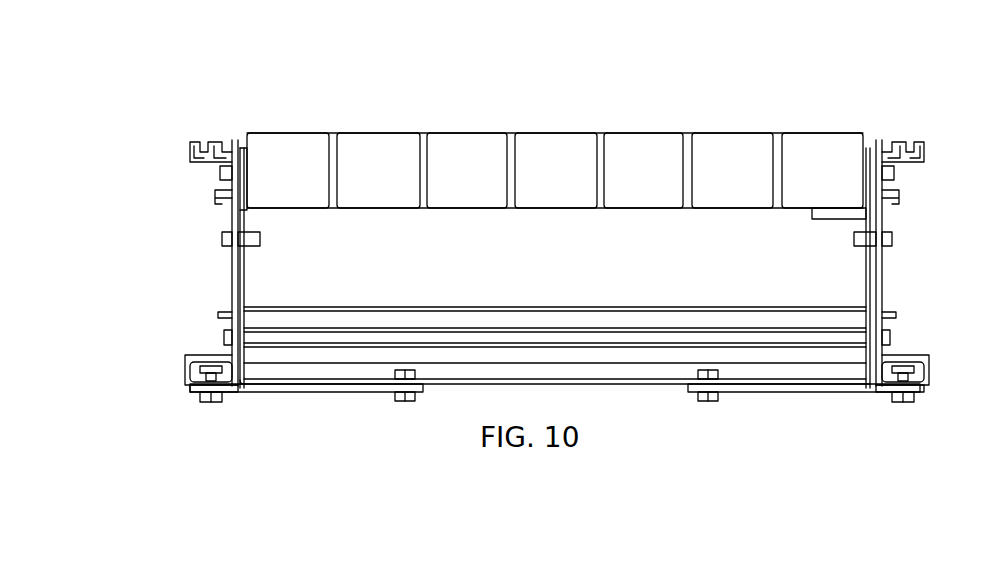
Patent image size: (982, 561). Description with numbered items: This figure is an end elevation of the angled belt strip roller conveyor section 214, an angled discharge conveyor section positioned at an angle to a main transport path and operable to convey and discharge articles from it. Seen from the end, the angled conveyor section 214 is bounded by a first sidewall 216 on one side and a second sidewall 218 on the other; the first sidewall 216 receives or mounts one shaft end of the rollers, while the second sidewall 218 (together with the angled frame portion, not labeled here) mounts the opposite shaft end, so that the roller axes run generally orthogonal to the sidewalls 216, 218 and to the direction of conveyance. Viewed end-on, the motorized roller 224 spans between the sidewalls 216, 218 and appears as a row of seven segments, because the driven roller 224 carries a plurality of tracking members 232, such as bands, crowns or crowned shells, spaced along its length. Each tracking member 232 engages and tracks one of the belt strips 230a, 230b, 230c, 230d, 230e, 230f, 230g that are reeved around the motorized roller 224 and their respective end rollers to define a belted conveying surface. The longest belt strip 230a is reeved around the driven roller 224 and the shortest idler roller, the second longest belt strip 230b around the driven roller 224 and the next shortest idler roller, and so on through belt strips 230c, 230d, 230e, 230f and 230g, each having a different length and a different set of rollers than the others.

The angled discharge conveyor section 214 is at (236, 104).
The first sidewall 216 is at (890, 269).
The second sidewall 218 is at (226, 267).
The motorized roller 224 is at (450, 150).
The tracking member 232 is at (288, 132).
The belt strip 230a is at (826, 150).
The belt strip 230b is at (710, 145).
The belt strip 230c is at (620, 150).
The belt strip 230d is at (536, 150).
The belt strip 230e is at (476, 142).
The belt strip 230f is at (355, 148).
The belt strip 230g is at (293, 195).